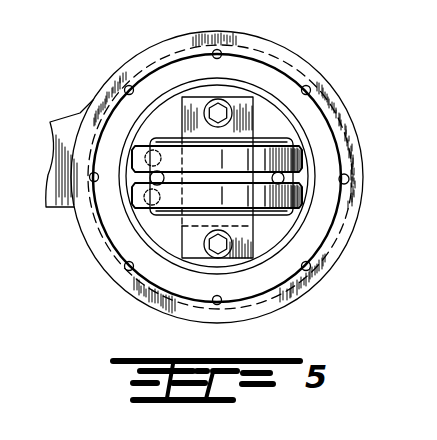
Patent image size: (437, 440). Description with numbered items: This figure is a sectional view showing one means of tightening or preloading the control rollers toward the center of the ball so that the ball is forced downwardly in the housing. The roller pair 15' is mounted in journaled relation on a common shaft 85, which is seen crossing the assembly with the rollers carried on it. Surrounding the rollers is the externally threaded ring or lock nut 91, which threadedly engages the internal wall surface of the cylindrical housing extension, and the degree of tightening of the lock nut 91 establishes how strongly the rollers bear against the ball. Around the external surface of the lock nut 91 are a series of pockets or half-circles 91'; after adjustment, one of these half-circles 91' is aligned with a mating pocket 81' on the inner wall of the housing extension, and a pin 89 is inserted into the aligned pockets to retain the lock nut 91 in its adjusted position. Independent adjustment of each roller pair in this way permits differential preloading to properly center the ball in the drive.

The roller pair 15' is at (168, 192).
The mating pocket 81' is at (254, 177).
The common shaft 85 is at (253, 113).
The pin 89 is at (348, 175).
The lock nut 91 is at (228, 177).
The pockets or half-circles 91' is at (221, 162).